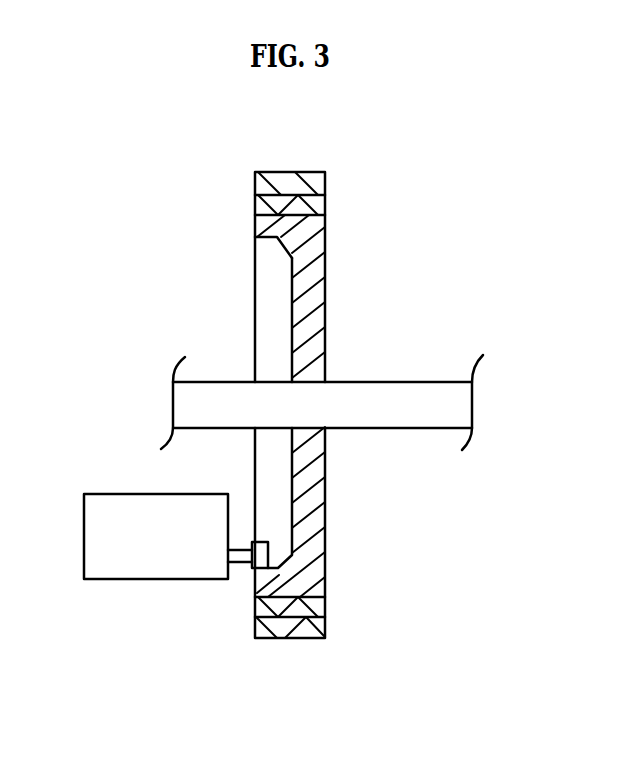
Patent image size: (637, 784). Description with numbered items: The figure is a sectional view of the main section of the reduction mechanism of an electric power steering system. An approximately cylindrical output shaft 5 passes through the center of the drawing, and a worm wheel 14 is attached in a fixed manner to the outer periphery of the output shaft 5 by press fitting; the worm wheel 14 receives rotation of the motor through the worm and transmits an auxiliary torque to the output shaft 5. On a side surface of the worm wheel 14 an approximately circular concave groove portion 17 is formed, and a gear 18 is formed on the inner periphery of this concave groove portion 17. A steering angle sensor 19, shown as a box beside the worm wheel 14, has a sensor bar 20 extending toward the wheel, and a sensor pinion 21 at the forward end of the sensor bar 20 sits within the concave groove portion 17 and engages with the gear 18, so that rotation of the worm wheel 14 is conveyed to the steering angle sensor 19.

The output shaft 5 is at (383, 382).
The worm wheel 14 is at (328, 218).
The concave groove portion 17 is at (292, 318).
The gear 18 is at (257, 246).
The steering angle sensor 19 is at (138, 579).
The sensor bar 20 is at (240, 562).
The sensor pinion 21 is at (265, 542).